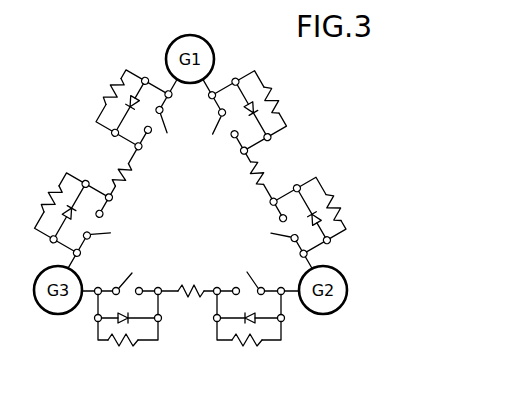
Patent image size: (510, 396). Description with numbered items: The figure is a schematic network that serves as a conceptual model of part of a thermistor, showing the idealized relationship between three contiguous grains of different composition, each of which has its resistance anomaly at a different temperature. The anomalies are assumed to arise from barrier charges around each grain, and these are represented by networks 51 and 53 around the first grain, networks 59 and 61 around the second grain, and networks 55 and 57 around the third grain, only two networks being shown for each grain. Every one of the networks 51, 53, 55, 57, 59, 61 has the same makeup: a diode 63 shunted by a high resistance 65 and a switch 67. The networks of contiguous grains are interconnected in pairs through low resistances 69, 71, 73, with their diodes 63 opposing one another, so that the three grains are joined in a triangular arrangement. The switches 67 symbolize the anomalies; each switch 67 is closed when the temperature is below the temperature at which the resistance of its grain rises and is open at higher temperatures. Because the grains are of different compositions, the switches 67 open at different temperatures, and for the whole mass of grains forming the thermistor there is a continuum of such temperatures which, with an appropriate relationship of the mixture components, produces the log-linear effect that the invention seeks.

The network 51 is at (134, 81).
The network 53 is at (247, 81).
The network 55 is at (54, 228).
The network 57 is at (102, 328).
The network 59 is at (277, 327).
The network 61 is at (337, 228).
The diode 63 is at (132, 310).
The high resistance 65 is at (121, 347).
The switch 67 is at (212, 127).
The low resistance 69 is at (132, 163).
The low resistance 71 is at (203, 286).
The low resistance 73 is at (253, 176).